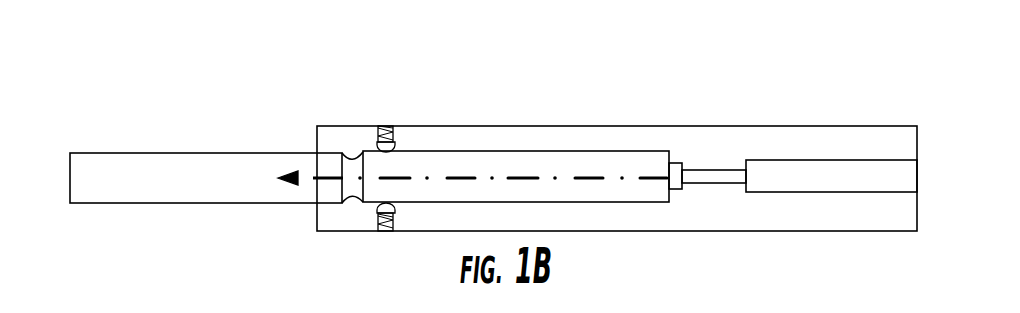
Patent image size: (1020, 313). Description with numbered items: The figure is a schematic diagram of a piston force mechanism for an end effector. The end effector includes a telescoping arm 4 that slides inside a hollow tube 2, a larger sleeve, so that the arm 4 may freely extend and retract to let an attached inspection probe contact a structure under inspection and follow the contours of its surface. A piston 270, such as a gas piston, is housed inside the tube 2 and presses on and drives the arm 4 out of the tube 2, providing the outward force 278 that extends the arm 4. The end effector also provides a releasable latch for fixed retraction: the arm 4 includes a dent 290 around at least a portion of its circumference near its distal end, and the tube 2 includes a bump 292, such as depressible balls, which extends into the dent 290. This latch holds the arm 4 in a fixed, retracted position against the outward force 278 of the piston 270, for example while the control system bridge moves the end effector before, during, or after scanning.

The tube 2 is at (840, 127).
The telescoping arm 4 is at (243, 163).
The piston 270 is at (747, 153).
The outward force 278 is at (500, 177).
The dent 290 is at (351, 152).
The bump 292 is at (387, 127).